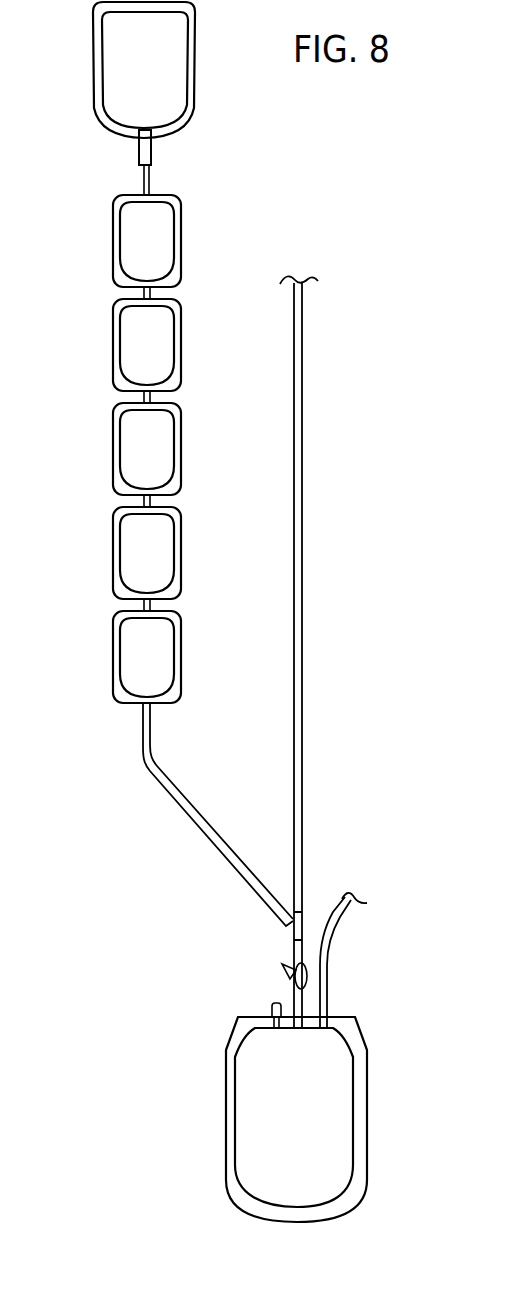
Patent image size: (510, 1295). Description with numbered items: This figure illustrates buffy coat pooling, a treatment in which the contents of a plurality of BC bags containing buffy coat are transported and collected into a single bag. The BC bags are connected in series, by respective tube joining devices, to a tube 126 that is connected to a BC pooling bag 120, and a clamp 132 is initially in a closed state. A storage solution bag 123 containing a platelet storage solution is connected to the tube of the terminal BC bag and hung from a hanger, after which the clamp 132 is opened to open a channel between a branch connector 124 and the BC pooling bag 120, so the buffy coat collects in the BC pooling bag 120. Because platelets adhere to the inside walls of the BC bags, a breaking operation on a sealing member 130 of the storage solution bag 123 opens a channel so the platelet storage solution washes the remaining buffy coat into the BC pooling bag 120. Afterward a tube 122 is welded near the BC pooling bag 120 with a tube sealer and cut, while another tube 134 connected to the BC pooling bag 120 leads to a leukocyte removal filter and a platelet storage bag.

The storage solution bag 123 is at (185, 70).
The sealing member 130 is at (137, 157).
The tube 126 is at (233, 858).
The tube 122 is at (302, 430).
The branch connector 124 is at (290, 931).
The clamp 132 is at (279, 975).
The tube 134 is at (337, 943).
The BC pooling bag 120 is at (245, 1108).